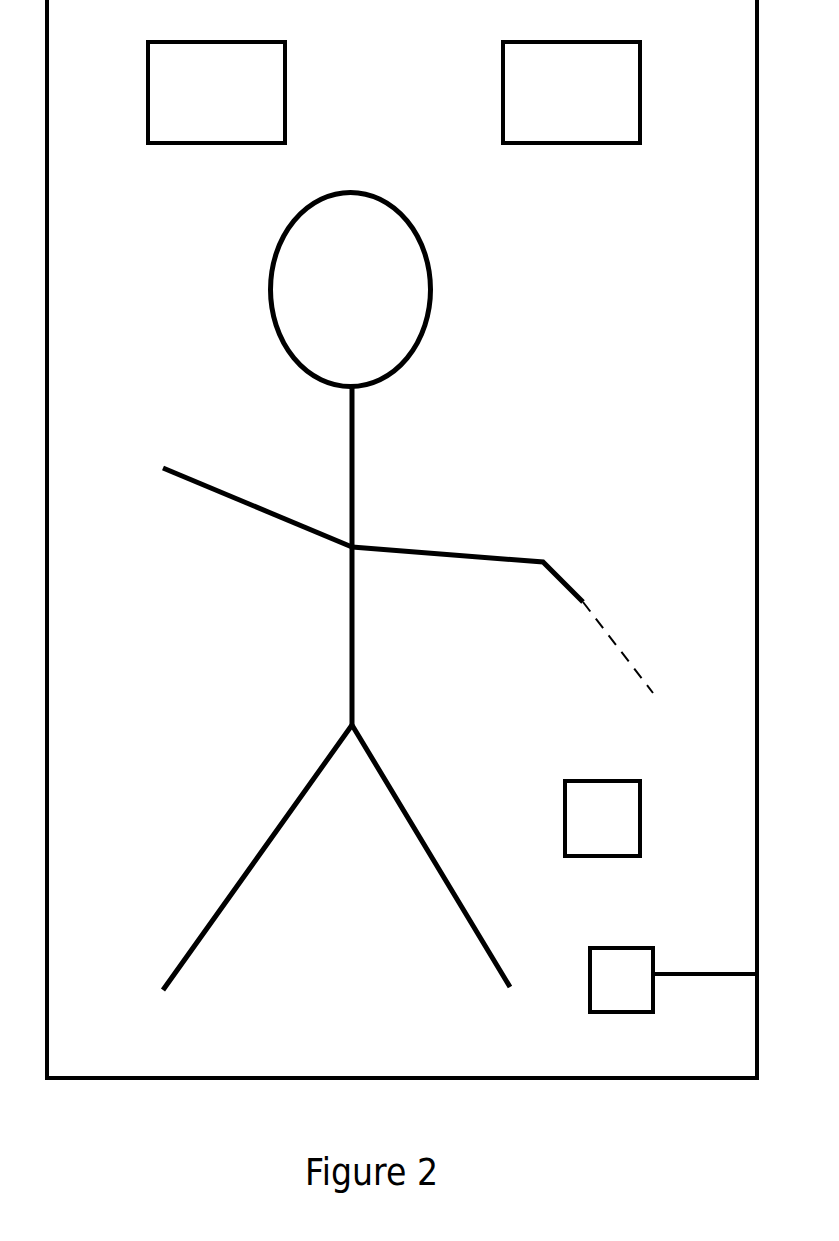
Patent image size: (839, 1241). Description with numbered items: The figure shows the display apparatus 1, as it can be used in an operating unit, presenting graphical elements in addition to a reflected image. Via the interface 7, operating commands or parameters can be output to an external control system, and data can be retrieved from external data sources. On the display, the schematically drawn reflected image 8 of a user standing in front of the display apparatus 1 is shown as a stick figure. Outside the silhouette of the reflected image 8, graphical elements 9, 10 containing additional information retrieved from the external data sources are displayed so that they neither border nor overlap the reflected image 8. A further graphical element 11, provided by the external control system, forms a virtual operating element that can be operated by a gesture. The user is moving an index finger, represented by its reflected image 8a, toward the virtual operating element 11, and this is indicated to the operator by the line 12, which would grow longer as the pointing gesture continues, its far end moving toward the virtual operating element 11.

The display apparatus 1 is at (757, 218).
The interface 7 is at (590, 988).
The reflected image 8 is at (460, 430).
The reflected image of the index finger 8a is at (563, 578).
The graphical element 9 is at (285, 89).
The graphical element 10 is at (503, 94).
The graphical element / virtual operating element 11 is at (565, 805).
The line 12 is at (613, 642).